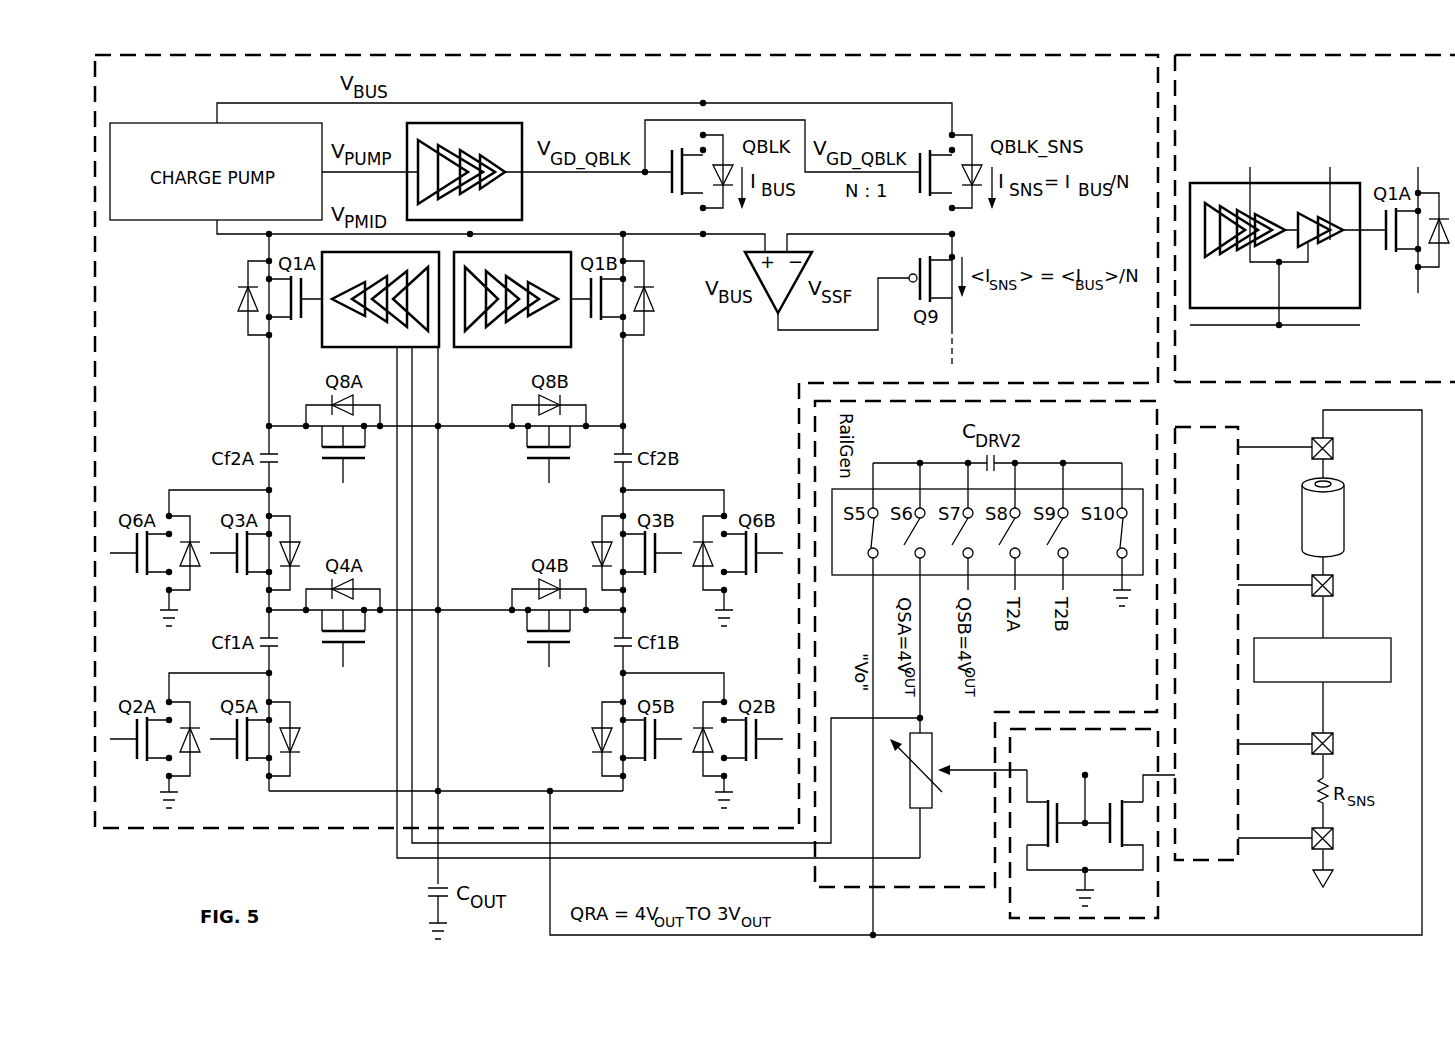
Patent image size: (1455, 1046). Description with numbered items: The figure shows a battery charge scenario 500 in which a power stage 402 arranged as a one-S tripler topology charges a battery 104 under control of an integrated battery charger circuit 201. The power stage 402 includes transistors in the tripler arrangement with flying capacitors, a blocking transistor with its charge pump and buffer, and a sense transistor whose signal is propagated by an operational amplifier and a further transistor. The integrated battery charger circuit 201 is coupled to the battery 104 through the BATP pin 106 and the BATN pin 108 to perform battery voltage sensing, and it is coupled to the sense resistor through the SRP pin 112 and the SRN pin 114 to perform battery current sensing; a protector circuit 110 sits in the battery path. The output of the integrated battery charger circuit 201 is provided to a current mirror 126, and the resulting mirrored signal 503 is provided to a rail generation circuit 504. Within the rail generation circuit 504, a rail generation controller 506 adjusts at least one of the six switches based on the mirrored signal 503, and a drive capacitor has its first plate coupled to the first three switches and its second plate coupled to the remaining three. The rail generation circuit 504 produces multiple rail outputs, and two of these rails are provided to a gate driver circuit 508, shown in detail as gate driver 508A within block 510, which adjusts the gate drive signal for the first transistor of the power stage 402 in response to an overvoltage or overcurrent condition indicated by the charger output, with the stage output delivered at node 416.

The battery charge scenario 500 is at (150, 872).
The power stage 402 is at (1088, 95).
The rail generator gate driver circuit 510 is at (1421, 95).
The gate driver circuit 508 is at (428, 347).
The gate driver 508A is at (1275, 183).
The output node 416 is at (441, 789).
The rail generation circuit 504 is at (1098, 677).
The rail generation controller 506 is at (933, 795).
The mirrored signal 503 is at (1028, 778).
The current mirror 126 is at (1158, 885).
The integrated battery charger circuit 201 is at (1226, 656).
The BATP pin 106 is at (1334, 441).
The battery 104 is at (1345, 517).
The BATN pin 108 is at (1334, 578).
The protector circuit 110 is at (1355, 682).
The SRP pin 112 is at (1334, 748).
The SRN pin 114 is at (1334, 843).